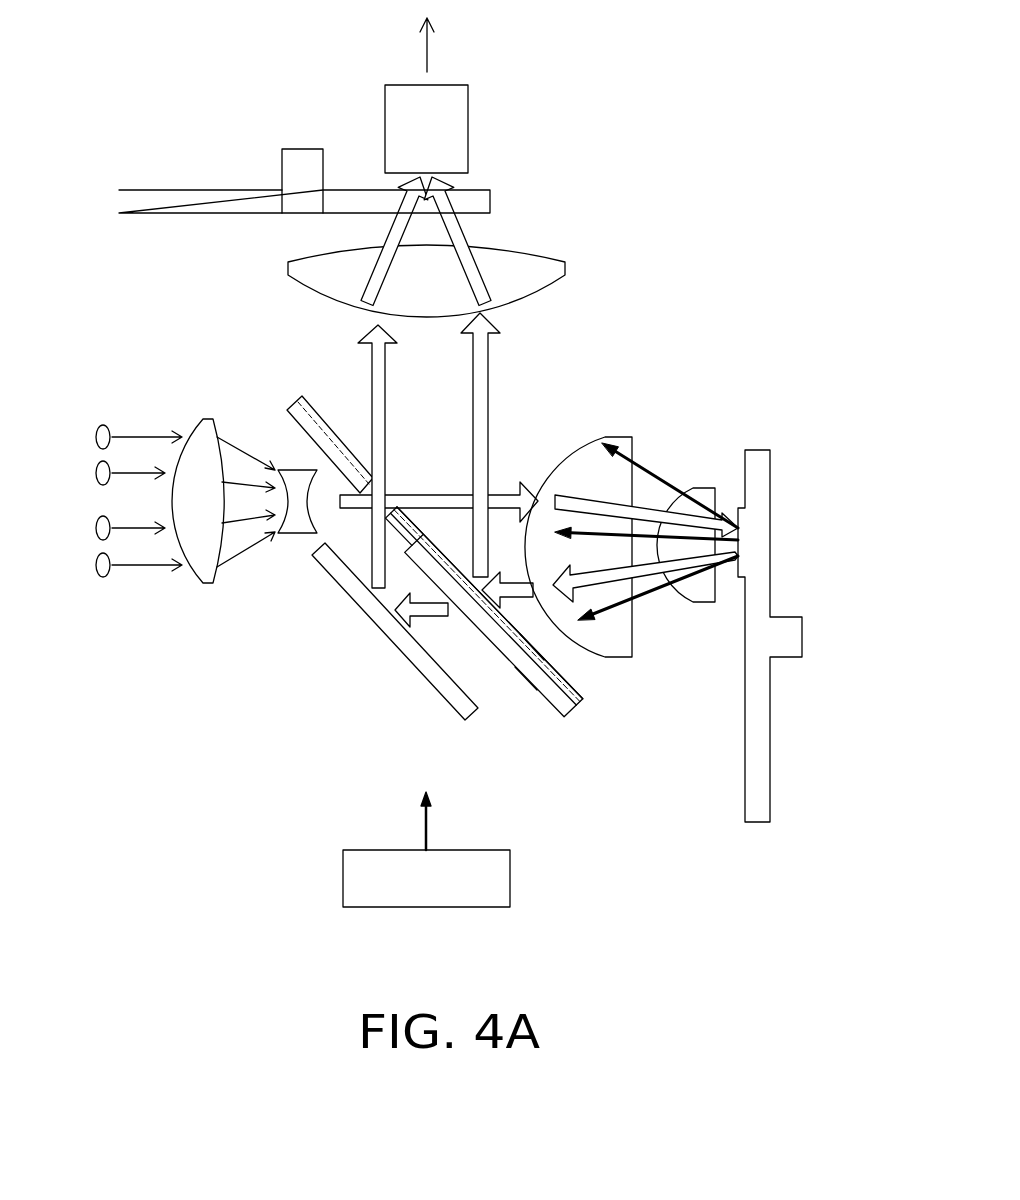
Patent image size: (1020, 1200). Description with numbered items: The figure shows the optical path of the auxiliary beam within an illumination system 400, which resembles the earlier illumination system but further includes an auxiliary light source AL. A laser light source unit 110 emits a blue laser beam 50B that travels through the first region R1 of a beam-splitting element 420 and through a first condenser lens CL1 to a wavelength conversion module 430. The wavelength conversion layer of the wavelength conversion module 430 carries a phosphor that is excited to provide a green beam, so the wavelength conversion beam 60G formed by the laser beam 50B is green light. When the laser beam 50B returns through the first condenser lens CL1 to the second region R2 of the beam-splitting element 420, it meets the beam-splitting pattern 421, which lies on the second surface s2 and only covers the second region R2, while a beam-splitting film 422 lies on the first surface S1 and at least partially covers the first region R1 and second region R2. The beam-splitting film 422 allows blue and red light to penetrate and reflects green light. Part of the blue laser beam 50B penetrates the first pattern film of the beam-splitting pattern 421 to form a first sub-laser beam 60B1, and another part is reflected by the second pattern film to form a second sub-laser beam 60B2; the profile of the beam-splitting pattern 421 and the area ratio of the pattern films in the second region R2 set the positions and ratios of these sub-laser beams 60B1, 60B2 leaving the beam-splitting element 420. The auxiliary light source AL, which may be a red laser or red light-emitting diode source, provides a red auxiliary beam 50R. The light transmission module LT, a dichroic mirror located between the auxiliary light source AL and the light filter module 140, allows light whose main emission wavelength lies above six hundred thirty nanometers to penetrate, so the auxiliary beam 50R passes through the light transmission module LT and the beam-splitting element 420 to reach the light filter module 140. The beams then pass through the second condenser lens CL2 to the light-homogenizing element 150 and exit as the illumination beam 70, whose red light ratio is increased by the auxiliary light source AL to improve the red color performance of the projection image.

The illumination beam 70 is at (427, 50).
The light-homogenizing element 150 is at (462, 122).
The light filter module 140 is at (178, 205).
The second condenser lens CL2 is at (542, 270).
The beam-splitting element 420 is at (343, 416).
The first region R1 is at (338, 449).
The first sub-laser beam 60B1 is at (380, 382).
The second sub-laser beam 60B2 is at (483, 395).
The laser beam 50B is at (122, 470).
The laser light source unit 110 is at (97, 447).
The beam-splitting film 422 is at (513, 596).
The first condenser lens CL1 is at (620, 447).
The wavelength conversion beam 60G is at (707, 533).
The wavelength conversion module 430 is at (771, 747).
The first surface S1 is at (544, 660).
The second surface s2 is at (537, 690).
The second region R2 is at (565, 705).
The beam-splitting pattern 421 is at (546, 611).
The light transmission module LT is at (465, 712).
The auxiliary beam 50R is at (425, 828).
The auxiliary light source AL is at (350, 890).
The illumination system 400 is at (710, 912).